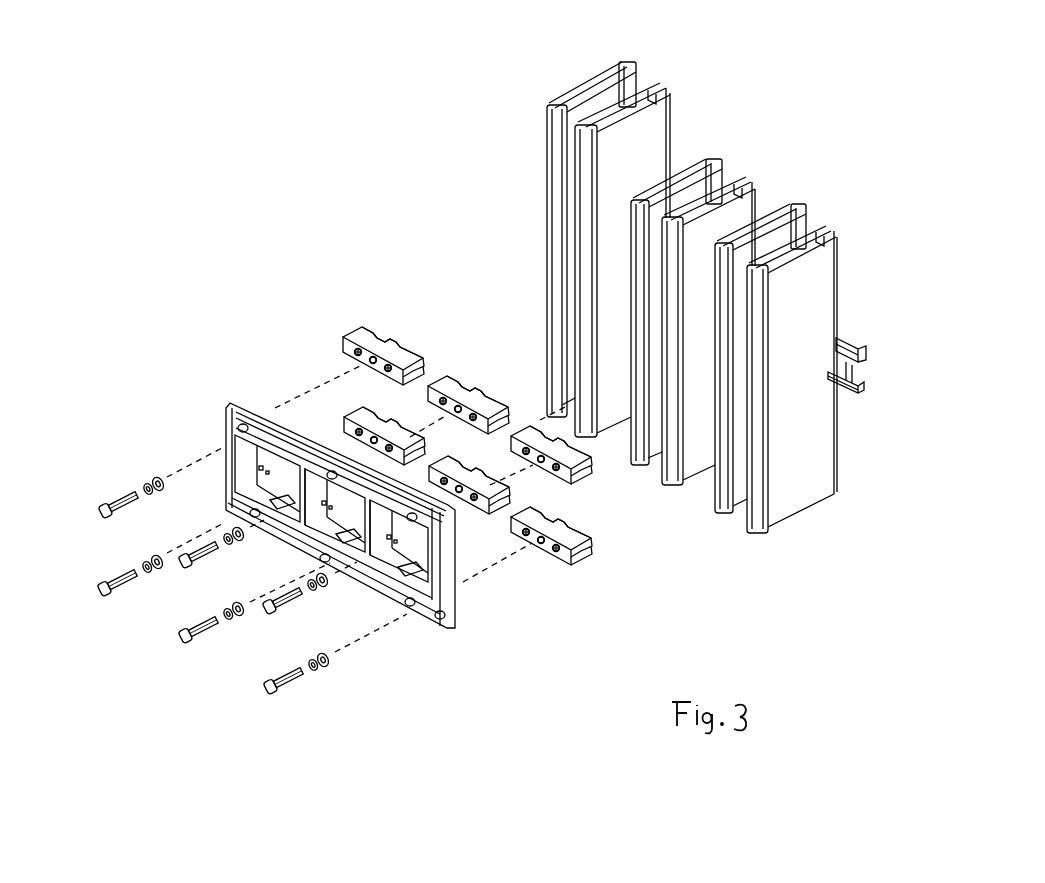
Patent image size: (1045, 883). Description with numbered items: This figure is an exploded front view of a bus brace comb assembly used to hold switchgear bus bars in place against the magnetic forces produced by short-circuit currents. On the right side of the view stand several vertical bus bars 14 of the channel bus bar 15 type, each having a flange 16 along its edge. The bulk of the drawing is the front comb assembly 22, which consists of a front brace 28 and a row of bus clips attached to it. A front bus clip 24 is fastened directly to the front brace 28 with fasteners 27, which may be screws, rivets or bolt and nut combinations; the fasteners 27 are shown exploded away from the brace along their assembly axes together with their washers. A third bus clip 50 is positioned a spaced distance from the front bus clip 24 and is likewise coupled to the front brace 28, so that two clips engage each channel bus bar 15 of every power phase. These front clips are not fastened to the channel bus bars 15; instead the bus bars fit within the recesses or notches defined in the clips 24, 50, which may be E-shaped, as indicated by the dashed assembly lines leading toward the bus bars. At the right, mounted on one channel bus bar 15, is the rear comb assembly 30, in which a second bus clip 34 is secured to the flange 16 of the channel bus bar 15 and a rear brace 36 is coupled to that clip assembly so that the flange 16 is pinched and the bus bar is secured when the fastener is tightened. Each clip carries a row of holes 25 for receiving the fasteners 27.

The vertical bus bar 14 is at (682, 64).
The channel bus bar 15 is at (597, 106).
The flange 16 is at (722, 522).
The front comb assembly 22 is at (298, 298).
The front bus clip 24 is at (390, 350).
The clip hole 25 is at (345, 351).
The fastener 27 is at (141, 503).
The front brace 28 is at (458, 552).
The rear comb assembly 30 is at (858, 331).
The second bus clip 34 is at (843, 388).
The rear brace 36 is at (854, 361).
The third bus clip 50 is at (380, 395).